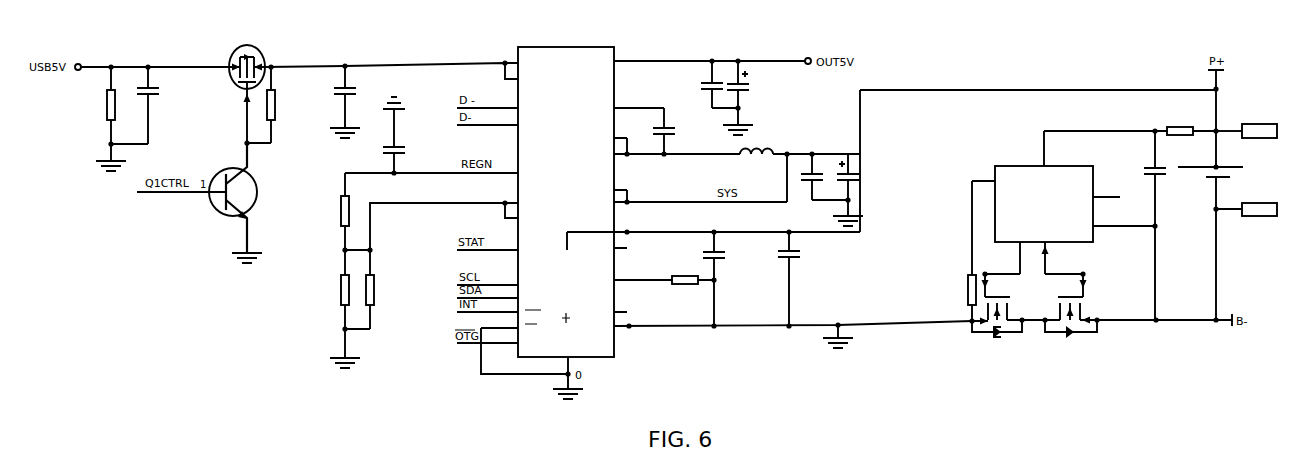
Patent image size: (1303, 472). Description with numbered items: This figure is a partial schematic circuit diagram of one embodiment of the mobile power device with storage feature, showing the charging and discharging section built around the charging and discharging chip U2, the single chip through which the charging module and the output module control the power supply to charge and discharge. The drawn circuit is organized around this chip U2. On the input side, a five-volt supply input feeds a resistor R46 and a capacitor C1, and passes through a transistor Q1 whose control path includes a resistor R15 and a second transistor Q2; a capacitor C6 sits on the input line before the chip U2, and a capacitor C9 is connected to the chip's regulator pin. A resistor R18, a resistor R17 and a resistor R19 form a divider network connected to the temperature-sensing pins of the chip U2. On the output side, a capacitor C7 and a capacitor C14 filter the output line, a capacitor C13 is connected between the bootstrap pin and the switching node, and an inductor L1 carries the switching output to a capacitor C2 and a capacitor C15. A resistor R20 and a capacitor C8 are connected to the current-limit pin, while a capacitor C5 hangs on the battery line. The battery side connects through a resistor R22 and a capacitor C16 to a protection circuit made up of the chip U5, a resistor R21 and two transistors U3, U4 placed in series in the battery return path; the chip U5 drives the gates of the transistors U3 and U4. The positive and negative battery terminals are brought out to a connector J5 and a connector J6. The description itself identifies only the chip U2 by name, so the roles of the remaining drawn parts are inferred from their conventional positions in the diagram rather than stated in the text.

The resistor R46 10K R46 is at (122, 105).
The capacitor C1 1uF C1 is at (156, 105).
The PMOS transistor Q1 is at (245, 79).
The resistor R15 100K R15 is at (276, 104).
The NPN transistor Q2 is at (246, 203).
The capacitor C6 22uF C6 is at (355, 102).
The capacitor C9 4.7uF C9 is at (409, 135).
The resistor R18 5.6K R18 is at (332, 211).
The resistor R17 10K NTC R17 is at (318, 289).
The resistor R19 31.2K R19 is at (388, 289).
The charging and discharging chip U2 is at (572, 189).
The capacitor C7 22uF C7 is at (710, 84).
The capacitor C14 100uF/6.3V C14 is at (770, 98).
The capacitor C13 47nF C13 is at (680, 138).
The inductor L1 ETQP3W2R2WFN L1 is at (732, 151).
The capacitor C2 1uF C2 is at (824, 177).
The capacitor C15 100uF/6.3V C15 is at (878, 190).
The resistor R20 270R R20 is at (682, 280).
The capacitor C8 22uF C8 is at (725, 279).
The capacitor C5 NC C5 is at (778, 279).
The battery protection IC U5 is at (1065, 202).
The resistor R21 1K R21 is at (961, 252).
The NMOS transistor U3 is at (998, 322).
The NMOS transistor U4 is at (1071, 322).
The resistor R22 100R R22 is at (1185, 132).
The capacitor C16 0.1uF C16 is at (1168, 225).
The connector J5 B+ J5 is at (1246, 132).
The connector J6 B- J6 is at (1259, 211).